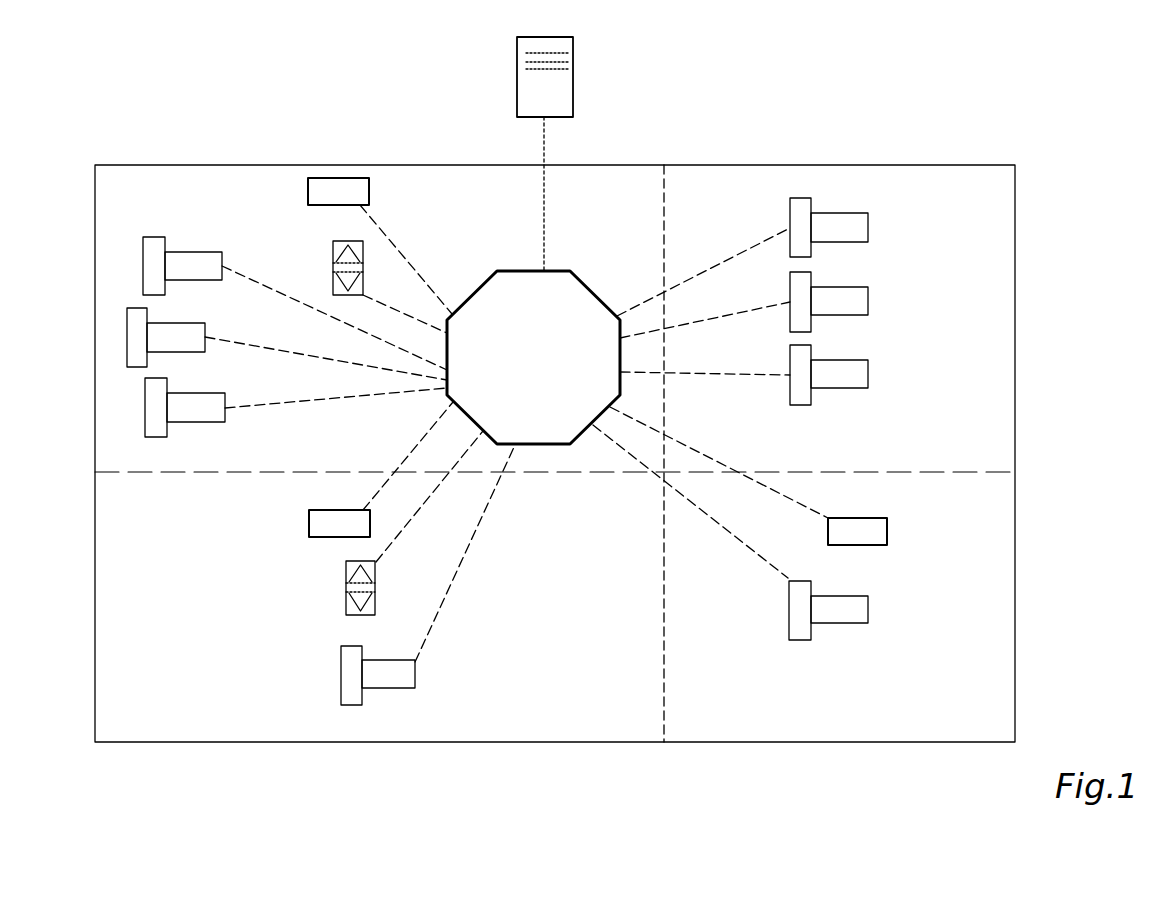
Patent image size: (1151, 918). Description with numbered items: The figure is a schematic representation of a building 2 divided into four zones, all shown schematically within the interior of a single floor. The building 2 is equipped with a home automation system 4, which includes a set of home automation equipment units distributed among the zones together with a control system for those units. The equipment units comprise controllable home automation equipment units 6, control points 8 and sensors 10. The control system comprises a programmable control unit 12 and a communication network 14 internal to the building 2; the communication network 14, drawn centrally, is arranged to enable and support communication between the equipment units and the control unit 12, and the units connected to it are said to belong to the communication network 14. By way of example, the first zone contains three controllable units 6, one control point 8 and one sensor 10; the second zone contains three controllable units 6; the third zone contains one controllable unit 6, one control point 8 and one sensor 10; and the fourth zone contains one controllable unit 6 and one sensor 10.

The building 2 is at (1015, 185).
The home automation system 4 is at (962, 132).
The controllable home automation equipment unit 6 is at (157, 272).
The control point 8 is at (333, 270).
The sensor 10 is at (320, 192).
The programmable control unit 12 is at (527, 100).
The communication network 14 is at (533, 357).